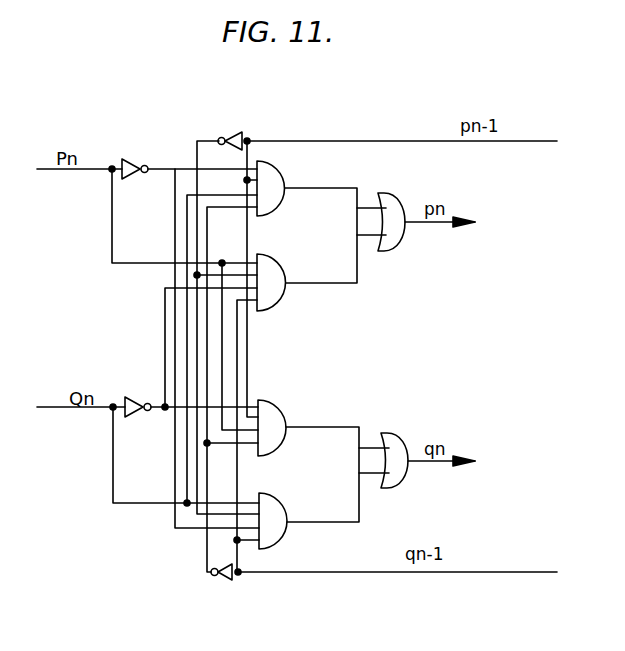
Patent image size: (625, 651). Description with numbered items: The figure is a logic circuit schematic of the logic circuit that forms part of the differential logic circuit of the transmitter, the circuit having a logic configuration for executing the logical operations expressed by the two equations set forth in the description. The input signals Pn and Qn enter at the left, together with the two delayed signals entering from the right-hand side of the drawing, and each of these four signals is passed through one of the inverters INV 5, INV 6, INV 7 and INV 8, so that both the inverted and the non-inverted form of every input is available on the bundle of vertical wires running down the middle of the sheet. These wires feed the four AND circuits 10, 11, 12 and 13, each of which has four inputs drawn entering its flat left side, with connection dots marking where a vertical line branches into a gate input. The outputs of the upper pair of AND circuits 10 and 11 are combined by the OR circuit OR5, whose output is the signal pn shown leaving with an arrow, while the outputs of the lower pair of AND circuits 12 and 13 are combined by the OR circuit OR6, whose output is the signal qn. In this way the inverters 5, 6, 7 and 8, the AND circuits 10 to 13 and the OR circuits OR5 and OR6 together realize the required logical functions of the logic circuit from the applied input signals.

The inverter INV 5 is at (138, 155).
The inverter INV 6 is at (251, 127).
The inverter INV 7 is at (128, 392).
The inverter INV 8 is at (230, 586).
The AND circuit A10 10 is at (293, 187).
The AND circuit A11 11 is at (293, 282).
The AND circuit A12 12 is at (294, 428).
The AND circuit A13 13 is at (295, 521).
The OR circuit OR 5 OR5 is at (426, 210).
The OR circuit OR 6 OR6 is at (428, 449).